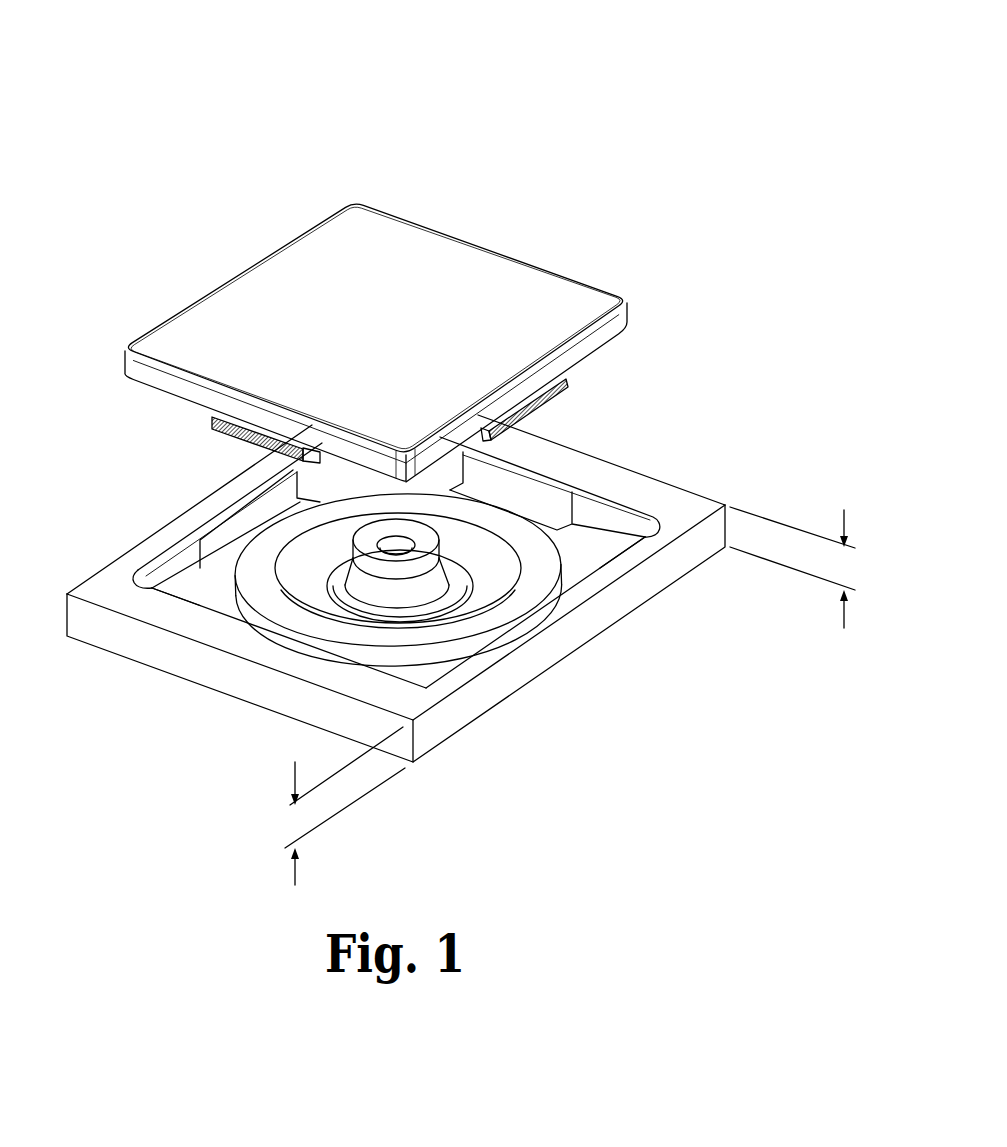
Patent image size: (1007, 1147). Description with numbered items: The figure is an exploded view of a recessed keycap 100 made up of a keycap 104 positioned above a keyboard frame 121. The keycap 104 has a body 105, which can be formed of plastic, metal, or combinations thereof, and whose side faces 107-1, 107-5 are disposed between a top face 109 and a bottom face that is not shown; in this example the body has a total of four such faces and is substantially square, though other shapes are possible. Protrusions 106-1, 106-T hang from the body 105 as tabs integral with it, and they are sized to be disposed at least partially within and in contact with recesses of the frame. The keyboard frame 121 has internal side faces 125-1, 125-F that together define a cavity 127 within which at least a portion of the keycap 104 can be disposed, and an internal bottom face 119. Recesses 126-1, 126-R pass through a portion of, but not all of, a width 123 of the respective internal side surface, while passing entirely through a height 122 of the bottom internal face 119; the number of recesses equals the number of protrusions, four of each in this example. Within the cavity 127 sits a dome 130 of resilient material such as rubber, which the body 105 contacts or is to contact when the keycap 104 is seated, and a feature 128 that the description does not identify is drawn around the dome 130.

The recessed keycap 100 is at (197, 50).
The keycap 104 is at (378, 198).
The body 105 is at (463, 275).
The top face 109 is at (272, 276).
The face 107-1 is at (167, 388).
The face 107-5 is at (607, 341).
The protrusion 106-1 is at (210, 418).
The protrusion 106-T is at (567, 386).
The keyboard frame 121 is at (729, 527).
The height 122 is at (338, 806).
The width 123 is at (796, 567).
The internal face 125-1 is at (173, 572).
The internal face 125-F is at (607, 518).
The recess 126-1 is at (250, 517).
The recess 126-R is at (530, 483).
The cavity 127 is at (205, 595).
The internal bottom face 119 is at (610, 546).
The annular disc 128 is at (423, 640).
The dome 130 is at (434, 580).